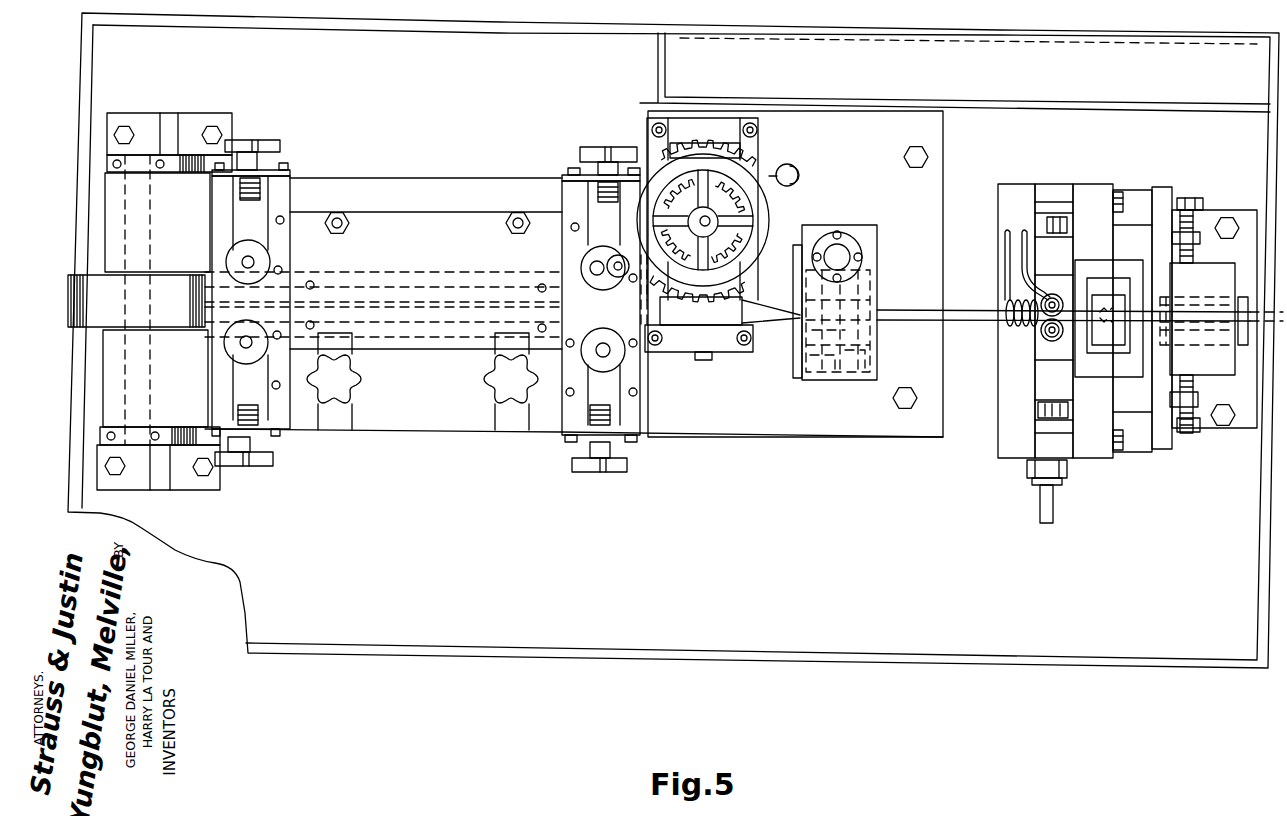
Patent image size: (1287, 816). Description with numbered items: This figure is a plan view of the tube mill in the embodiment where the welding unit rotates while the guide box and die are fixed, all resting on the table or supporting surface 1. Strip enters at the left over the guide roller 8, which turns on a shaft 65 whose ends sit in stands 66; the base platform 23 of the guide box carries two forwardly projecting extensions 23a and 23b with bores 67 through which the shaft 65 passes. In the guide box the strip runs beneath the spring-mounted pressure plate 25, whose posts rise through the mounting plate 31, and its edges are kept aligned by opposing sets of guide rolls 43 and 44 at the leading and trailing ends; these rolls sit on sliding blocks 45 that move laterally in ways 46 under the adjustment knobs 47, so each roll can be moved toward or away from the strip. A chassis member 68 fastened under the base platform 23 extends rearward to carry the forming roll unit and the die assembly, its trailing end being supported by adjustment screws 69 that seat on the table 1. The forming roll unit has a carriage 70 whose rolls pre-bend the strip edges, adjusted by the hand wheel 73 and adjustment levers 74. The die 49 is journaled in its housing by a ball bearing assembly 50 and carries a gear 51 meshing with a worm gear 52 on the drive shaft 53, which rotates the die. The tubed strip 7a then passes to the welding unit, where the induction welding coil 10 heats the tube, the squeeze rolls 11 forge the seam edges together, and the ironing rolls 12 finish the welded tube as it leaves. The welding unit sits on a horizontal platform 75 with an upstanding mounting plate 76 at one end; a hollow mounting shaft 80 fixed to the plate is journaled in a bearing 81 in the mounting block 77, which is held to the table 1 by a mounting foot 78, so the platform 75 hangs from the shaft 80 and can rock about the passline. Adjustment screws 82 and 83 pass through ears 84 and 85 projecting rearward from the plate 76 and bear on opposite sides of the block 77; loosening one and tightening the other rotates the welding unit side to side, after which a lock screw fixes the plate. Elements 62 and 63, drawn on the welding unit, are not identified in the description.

The table 1 is at (333, 633).
The tubed strip 7a is at (965, 312).
The guide roller 8 is at (95, 290).
The high-frequency induction welding coil 10 is at (1003, 253).
The squeeze rolls 11 is at (1053, 294).
The ironing rolls 12 is at (1105, 310).
The base platform 23 is at (420, 422).
The forwardly projecting extension 23a is at (205, 252).
The forwardly projecting extension 23b is at (193, 368).
The pressure plate 25 is at (390, 280).
The mounting plate 31 is at (377, 215).
The guide rolls 43 is at (248, 250).
The guide rolls 44 is at (243, 360).
The sliding blocks 45 is at (265, 200).
The ways 46 is at (283, 241).
The adjustment knobs 47 is at (273, 140).
The die 49 is at (823, 345).
The ball bearing assembly 50 is at (867, 277).
The gear 51 is at (840, 370).
The worm gear 52 is at (831, 248).
The drive shaft 53 is at (847, 242).
The screw 62 is at (1062, 410).
The fitting 63 is at (1053, 510).
The shaft 65 is at (142, 215).
The stands 66 is at (190, 118).
The bores 67 is at (117, 193).
The chassis member 68 is at (773, 425).
The adjustment screws 69 is at (922, 155).
The carriage 70 is at (748, 282).
The hand wheel 73 is at (663, 177).
The adjustment levers 74 is at (618, 258).
The platform 75 is at (1138, 190).
The mounting plate 76 is at (1168, 192).
The mounting block 77 is at (1225, 270).
The mounting foot 78 is at (1245, 430).
The hollow mounting shaft 80 is at (1243, 297).
The bearing 81 is at (1208, 346).
The adjustment screw 82 is at (1200, 210).
The adjustment screw 83 is at (1193, 384).
The ear 84 is at (1192, 238).
The ear 85 is at (1198, 400).